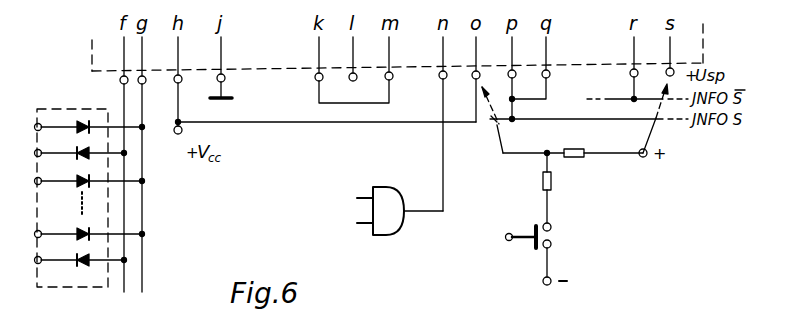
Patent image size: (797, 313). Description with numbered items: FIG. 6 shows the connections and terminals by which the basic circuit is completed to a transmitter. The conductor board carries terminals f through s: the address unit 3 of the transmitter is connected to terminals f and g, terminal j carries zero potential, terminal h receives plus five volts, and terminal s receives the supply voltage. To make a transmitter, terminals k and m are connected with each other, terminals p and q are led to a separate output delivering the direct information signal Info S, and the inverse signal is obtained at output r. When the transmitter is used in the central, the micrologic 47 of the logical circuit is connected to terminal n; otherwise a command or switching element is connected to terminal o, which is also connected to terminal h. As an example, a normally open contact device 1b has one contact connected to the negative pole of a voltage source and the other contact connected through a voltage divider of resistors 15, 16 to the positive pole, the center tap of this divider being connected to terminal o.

The address unit 3 is at (59, 109).
The micrologic 47 is at (392, 195).
The normally open contact device 1b is at (526, 245).
The resistor R15 15 is at (569, 144).
The resistor R16 16 is at (565, 188).